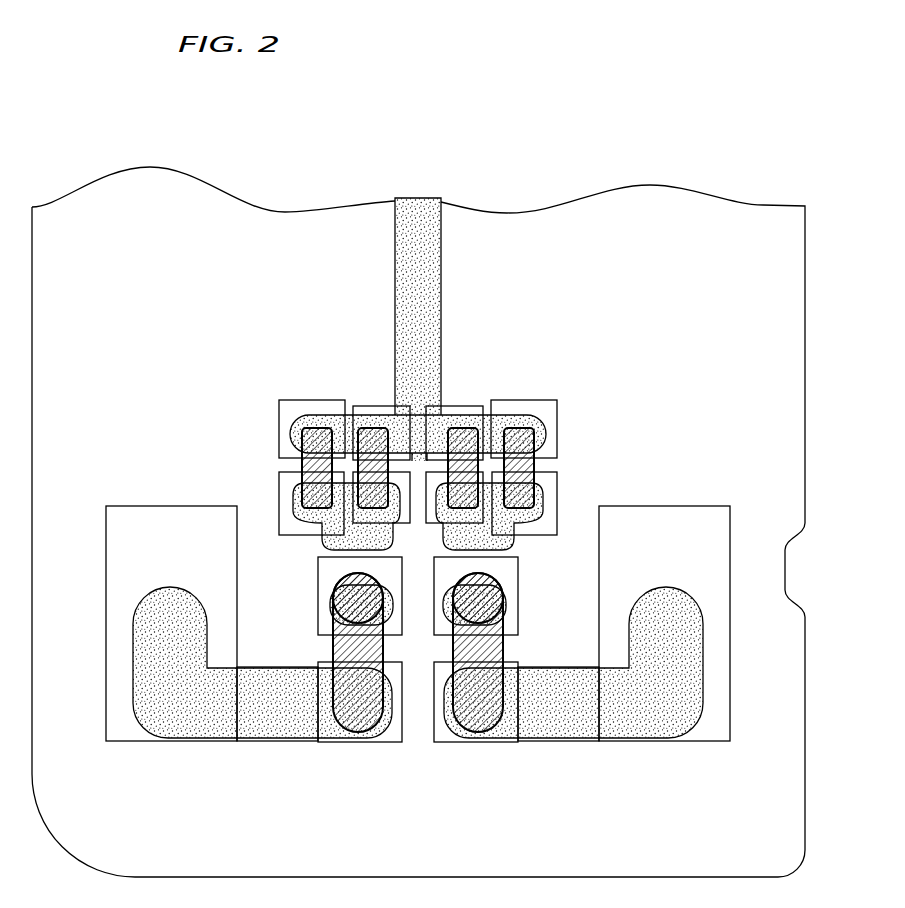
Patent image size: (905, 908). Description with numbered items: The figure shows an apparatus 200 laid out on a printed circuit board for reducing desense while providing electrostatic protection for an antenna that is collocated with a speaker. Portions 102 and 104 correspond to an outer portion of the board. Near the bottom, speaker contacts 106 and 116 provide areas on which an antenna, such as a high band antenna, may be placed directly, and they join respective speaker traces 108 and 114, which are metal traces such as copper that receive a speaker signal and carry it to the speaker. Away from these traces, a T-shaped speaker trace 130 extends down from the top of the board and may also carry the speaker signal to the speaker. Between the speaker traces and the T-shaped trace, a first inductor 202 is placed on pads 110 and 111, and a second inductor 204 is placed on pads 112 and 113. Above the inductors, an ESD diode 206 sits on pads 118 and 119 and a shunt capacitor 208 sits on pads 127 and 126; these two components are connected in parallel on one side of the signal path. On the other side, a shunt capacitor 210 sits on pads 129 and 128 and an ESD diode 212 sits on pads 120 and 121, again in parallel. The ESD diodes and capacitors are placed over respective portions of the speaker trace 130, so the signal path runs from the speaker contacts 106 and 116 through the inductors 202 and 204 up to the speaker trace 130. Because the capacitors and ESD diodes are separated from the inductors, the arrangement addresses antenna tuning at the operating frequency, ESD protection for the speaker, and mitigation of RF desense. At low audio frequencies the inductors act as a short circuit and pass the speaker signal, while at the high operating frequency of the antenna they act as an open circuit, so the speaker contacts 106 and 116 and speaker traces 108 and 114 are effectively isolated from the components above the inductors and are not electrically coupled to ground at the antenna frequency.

The apparatus 200 is at (648, 164).
The portion 102 is at (258, 583).
The portion 104 is at (590, 584).
The speaker contact 106 is at (135, 742).
The speaker trace 108 is at (277, 718).
The pad 110 is at (318, 587).
The pad 111 is at (336, 754).
The pad 112 is at (520, 598).
The pad 113 is at (497, 754).
The speaker trace 114 is at (559, 718).
The speaker contact 116 is at (702, 742).
The pad 118 is at (252, 442).
The pad 119 is at (280, 508).
The pad 120 is at (568, 442).
The pad 121 is at (555, 518).
The pad 126 is at (353, 465).
The pad 127 is at (372, 434).
The pad 128 is at (483, 465).
The pad 129 is at (466, 434).
The speaker trace 130 is at (425, 270).
The inductor 202 is at (343, 645).
The inductor 204 is at (490, 645).
The ESD diode 206 is at (312, 437).
The shunt capacitor 208 is at (373, 437).
The shunt capacitor 210 is at (463, 437).
The ESD diode 212 is at (522, 437).